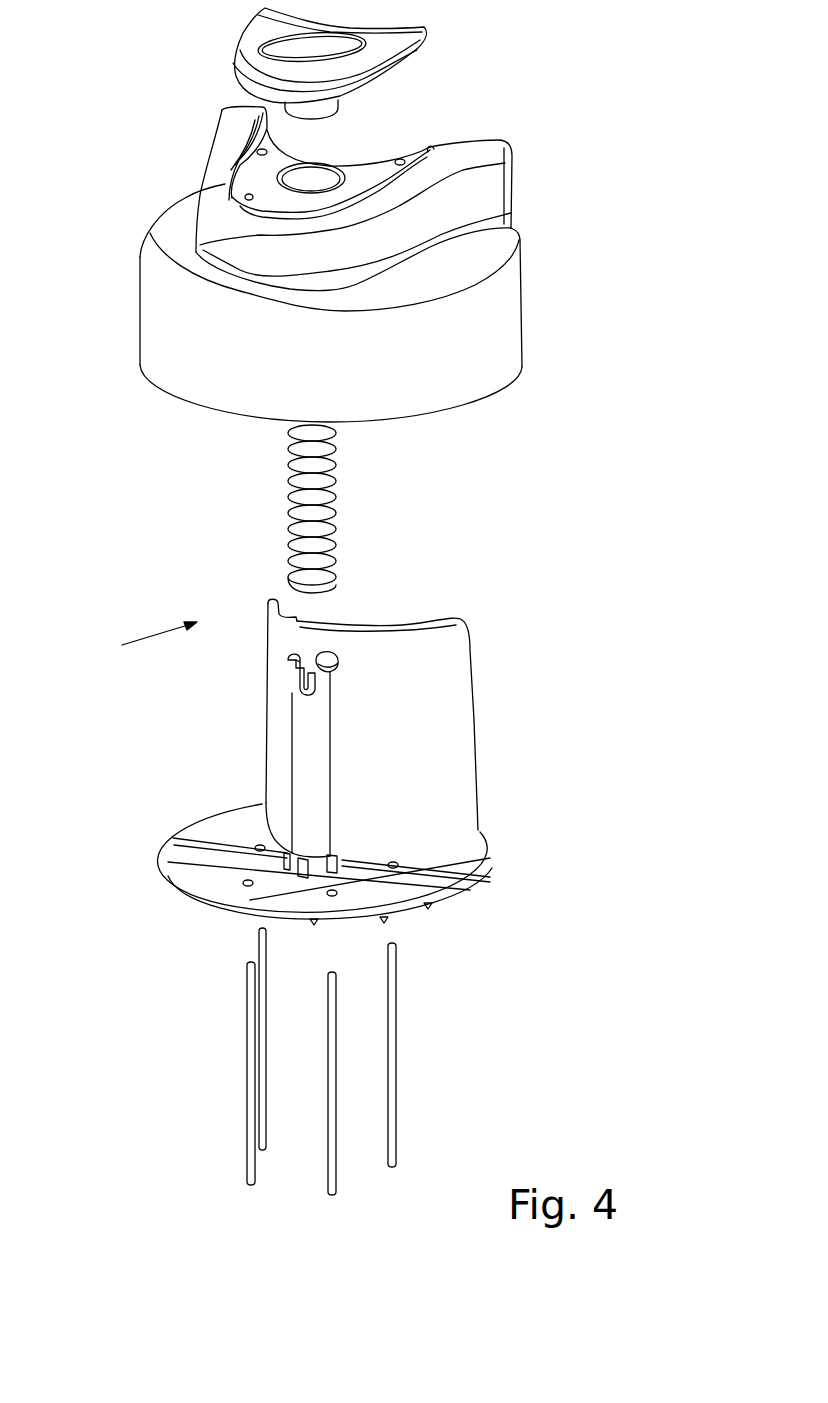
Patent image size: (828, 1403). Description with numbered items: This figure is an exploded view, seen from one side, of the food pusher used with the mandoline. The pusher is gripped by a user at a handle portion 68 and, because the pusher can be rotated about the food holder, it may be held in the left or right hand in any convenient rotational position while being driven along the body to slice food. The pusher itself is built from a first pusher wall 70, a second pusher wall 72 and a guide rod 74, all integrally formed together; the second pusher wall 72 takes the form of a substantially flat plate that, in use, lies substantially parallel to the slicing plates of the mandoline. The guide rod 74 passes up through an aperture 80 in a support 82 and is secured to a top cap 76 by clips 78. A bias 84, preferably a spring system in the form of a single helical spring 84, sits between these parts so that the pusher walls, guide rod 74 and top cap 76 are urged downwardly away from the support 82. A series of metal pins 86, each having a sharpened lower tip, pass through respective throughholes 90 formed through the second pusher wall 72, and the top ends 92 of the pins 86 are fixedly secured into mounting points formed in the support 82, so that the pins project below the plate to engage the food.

The handle portion 68 is at (281, 179).
The first pusher wall 70 is at (376, 720).
The second pusher wall 72 is at (346, 875).
The guide rod 74 is at (312, 790).
The top cap 76 is at (375, 48).
The clips 78 is at (300, 652).
The aperture 80 is at (318, 178).
The support 82 is at (494, 326).
The helical spring 84 is at (334, 524).
The metal pins 86 is at (366, 1059).
The throughholes 90 is at (424, 904).
The top ends 92 is at (396, 943).